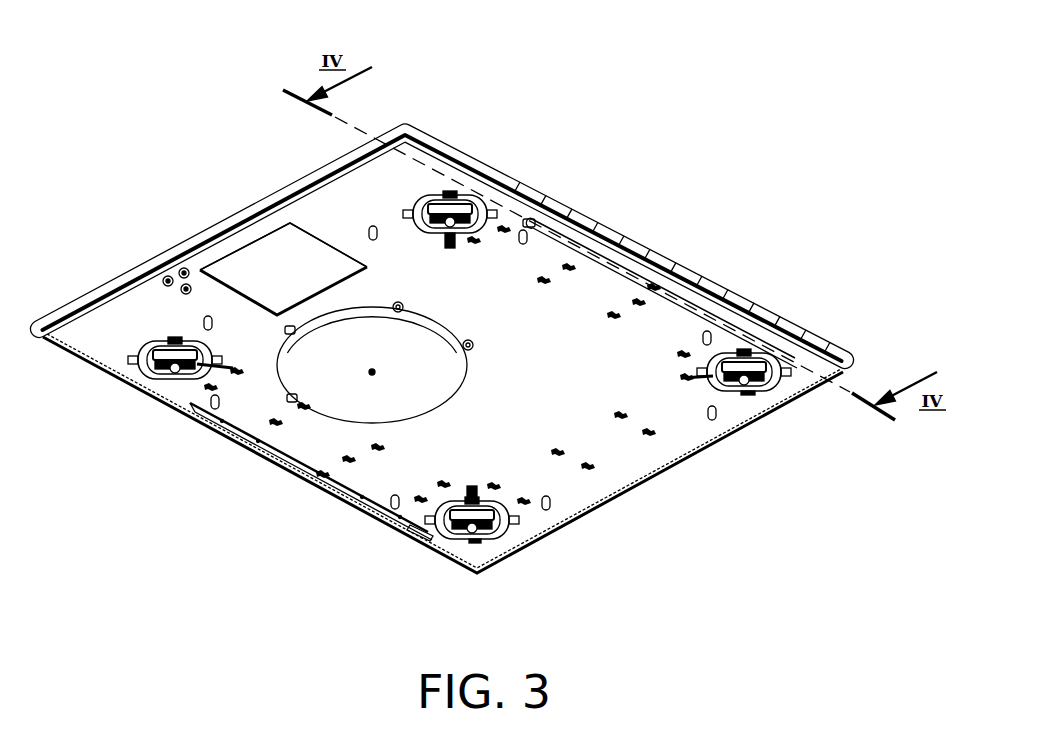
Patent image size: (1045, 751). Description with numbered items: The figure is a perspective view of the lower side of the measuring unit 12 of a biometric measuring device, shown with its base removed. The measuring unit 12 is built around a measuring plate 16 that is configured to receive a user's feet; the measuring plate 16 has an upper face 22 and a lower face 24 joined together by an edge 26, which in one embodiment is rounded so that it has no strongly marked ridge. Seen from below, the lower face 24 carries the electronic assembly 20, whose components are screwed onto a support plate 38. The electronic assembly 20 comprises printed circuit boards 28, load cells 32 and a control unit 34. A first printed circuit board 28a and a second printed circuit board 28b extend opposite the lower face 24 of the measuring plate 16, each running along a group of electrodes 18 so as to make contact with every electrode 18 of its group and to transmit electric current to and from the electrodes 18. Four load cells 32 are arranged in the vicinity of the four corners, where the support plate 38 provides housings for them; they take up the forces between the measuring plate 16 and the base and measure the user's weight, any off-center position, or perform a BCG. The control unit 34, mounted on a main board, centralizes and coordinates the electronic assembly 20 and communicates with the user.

The measuring unit 12 is at (480, 118).
The measuring plate 16 is at (410, 127).
The electrode 18 is at (635, 233).
The electronic assembly 20 is at (275, 253).
The upper face 22 is at (505, 173).
The lower face 24 is at (813, 333).
The edge 26 is at (687, 267).
The printed circuit board 28 is at (514, 387).
The first printed circuit board 28a is at (742, 293).
The second printed circuit board 28b is at (295, 460).
The load cell 32 is at (155, 378).
The control unit 34 is at (227, 268).
The support plate 38 is at (620, 450).